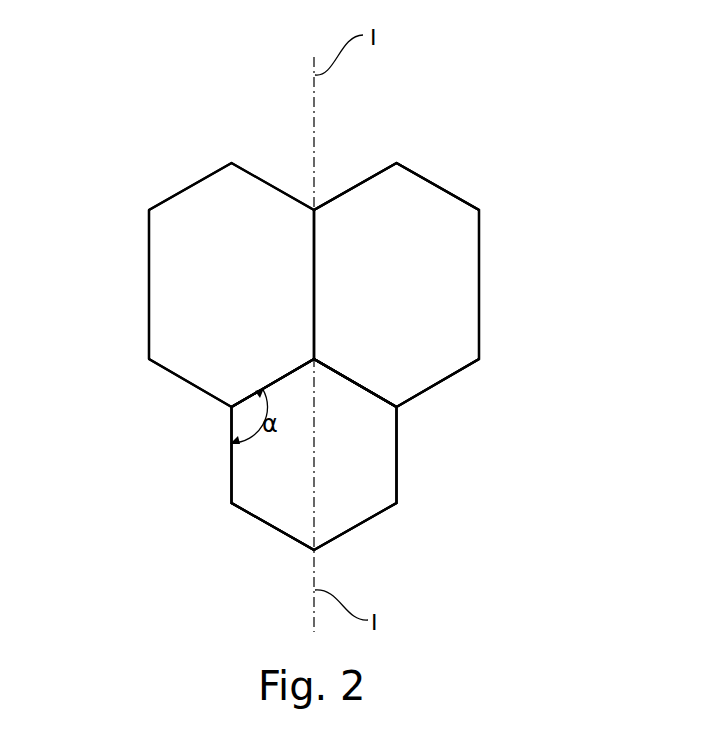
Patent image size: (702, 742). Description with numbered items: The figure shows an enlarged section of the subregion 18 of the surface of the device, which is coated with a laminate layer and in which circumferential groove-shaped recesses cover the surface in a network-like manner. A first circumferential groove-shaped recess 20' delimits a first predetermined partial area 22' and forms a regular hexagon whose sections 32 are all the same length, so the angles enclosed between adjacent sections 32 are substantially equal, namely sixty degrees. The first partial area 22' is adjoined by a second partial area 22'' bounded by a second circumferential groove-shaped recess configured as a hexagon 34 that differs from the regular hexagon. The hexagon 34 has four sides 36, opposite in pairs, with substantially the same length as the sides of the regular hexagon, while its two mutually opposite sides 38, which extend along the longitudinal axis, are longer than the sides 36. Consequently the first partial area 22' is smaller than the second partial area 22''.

The subregion 18 is at (493, 181).
The first circumferential groove-shaped recess 20' is at (414, 356).
The second partial area 22'' is at (457, 285).
The first partial area 22' is at (356, 460).
The section 32 is at (258, 520).
The hexagon 34 is at (149, 316).
The side 36 is at (192, 181).
The side 38 is at (149, 252).